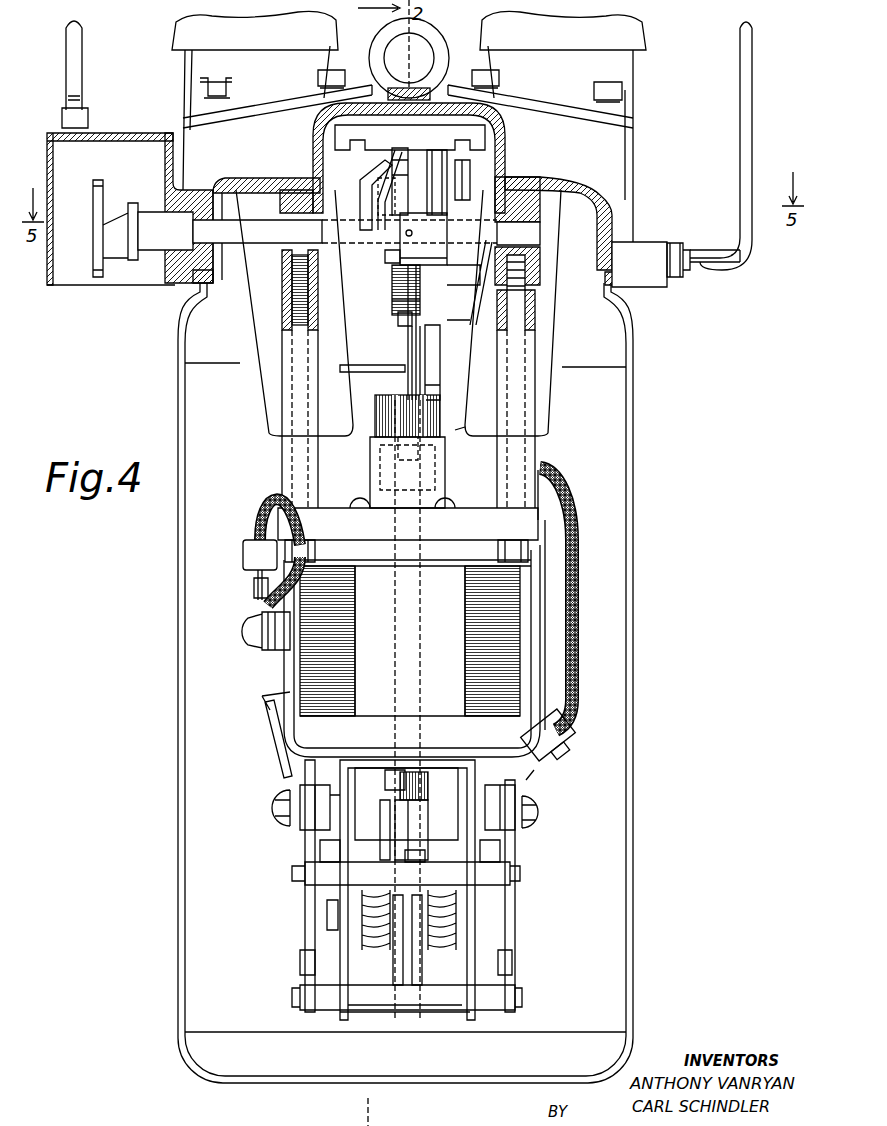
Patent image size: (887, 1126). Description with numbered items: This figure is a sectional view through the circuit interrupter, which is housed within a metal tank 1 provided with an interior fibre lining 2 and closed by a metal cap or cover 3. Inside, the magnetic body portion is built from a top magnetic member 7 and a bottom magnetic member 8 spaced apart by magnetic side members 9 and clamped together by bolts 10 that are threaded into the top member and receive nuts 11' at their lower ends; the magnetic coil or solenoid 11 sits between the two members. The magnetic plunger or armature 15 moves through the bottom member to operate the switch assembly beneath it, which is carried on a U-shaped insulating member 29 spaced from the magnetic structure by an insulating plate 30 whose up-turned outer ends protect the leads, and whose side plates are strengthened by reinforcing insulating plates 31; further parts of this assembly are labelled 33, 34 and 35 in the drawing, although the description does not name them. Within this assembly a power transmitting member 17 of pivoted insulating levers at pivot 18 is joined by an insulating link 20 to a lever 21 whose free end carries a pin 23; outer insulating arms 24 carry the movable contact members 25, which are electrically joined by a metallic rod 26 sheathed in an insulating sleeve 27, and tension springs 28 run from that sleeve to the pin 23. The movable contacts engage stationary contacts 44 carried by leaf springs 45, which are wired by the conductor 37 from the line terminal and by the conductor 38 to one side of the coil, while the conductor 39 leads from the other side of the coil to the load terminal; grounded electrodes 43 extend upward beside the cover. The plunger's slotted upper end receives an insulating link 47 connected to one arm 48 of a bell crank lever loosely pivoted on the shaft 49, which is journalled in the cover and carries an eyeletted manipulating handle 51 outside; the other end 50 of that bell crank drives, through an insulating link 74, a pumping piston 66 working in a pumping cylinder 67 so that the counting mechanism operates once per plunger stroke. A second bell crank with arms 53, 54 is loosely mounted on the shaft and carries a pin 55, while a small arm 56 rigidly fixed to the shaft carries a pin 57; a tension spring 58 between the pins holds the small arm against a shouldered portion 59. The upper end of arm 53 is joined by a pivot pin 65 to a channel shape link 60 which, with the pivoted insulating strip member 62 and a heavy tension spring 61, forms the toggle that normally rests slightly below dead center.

The tank 1 is at (633, 530).
The interior fibre lining 2 is at (626, 478).
The cap or cover 3 is at (612, 196).
The top magnetic member 7 is at (540, 524).
The bottom magnetic member 8 is at (437, 740).
The magnetic side members 9 is at (368, 556).
The bolts 10 is at (424, 800).
The magnetic coil or solenoid 11 is at (271, 643).
The nuts 11' is at (381, 779).
The magnetic plunger or armature 15 is at (372, 400).
The power transmitting member 17 is at (425, 818).
The pivot 18 is at (382, 832).
The insulating link 20 is at (420, 855).
The lever 21 is at (422, 972).
The pin 23 is at (388, 962).
The insulating arms 24 is at (305, 932).
The movable contact members 25 is at (290, 806).
The metallic rod 26 is at (294, 874).
The insulating sleeve 27 is at (312, 896).
The tension springs 28 is at (364, 946).
The U-shaped insulating member 29 is at (345, 995).
The insulating plate 30 is at (535, 712).
The reinforcing insulating plates 31 is at (476, 782).
The block 33 is at (296, 960).
The bar 34 is at (380, 1000).
The lower bar 35 is at (294, 992).
The conductor 37 is at (576, 604).
The conductor 38 is at (272, 748).
The conductor 39 is at (258, 508).
The grounded electrodes 43 is at (740, 90).
The stationary contacts 44 is at (330, 795).
The leaf springs 45 is at (325, 848).
The insulating link 47 is at (400, 370).
The arm of bell crank lever 48 is at (360, 185).
The shaft 49 is at (270, 222).
The other end of bell crank lever 50 is at (398, 146).
The manipulating handle or lever 51 is at (93, 192).
The arm of second bell crank lever 53 is at (530, 268).
The arm of second bell crank lever 54 is at (410, 332).
The pin 55 is at (398, 318).
The small arm or lever 56 is at (423, 239).
The pin 57 is at (392, 262).
The tension spring 58 is at (392, 284).
The shouldered portion 59 is at (392, 303).
The channel shape link 60 is at (436, 148).
The tension spring 61 is at (489, 290).
The insulating strip member 62 is at (438, 360).
The pivot pin 65 is at (392, 168).
The pumping piston 66 is at (440, 425).
The pumping cylinder 67 is at (442, 468).
The insulating link 74 is at (410, 355).